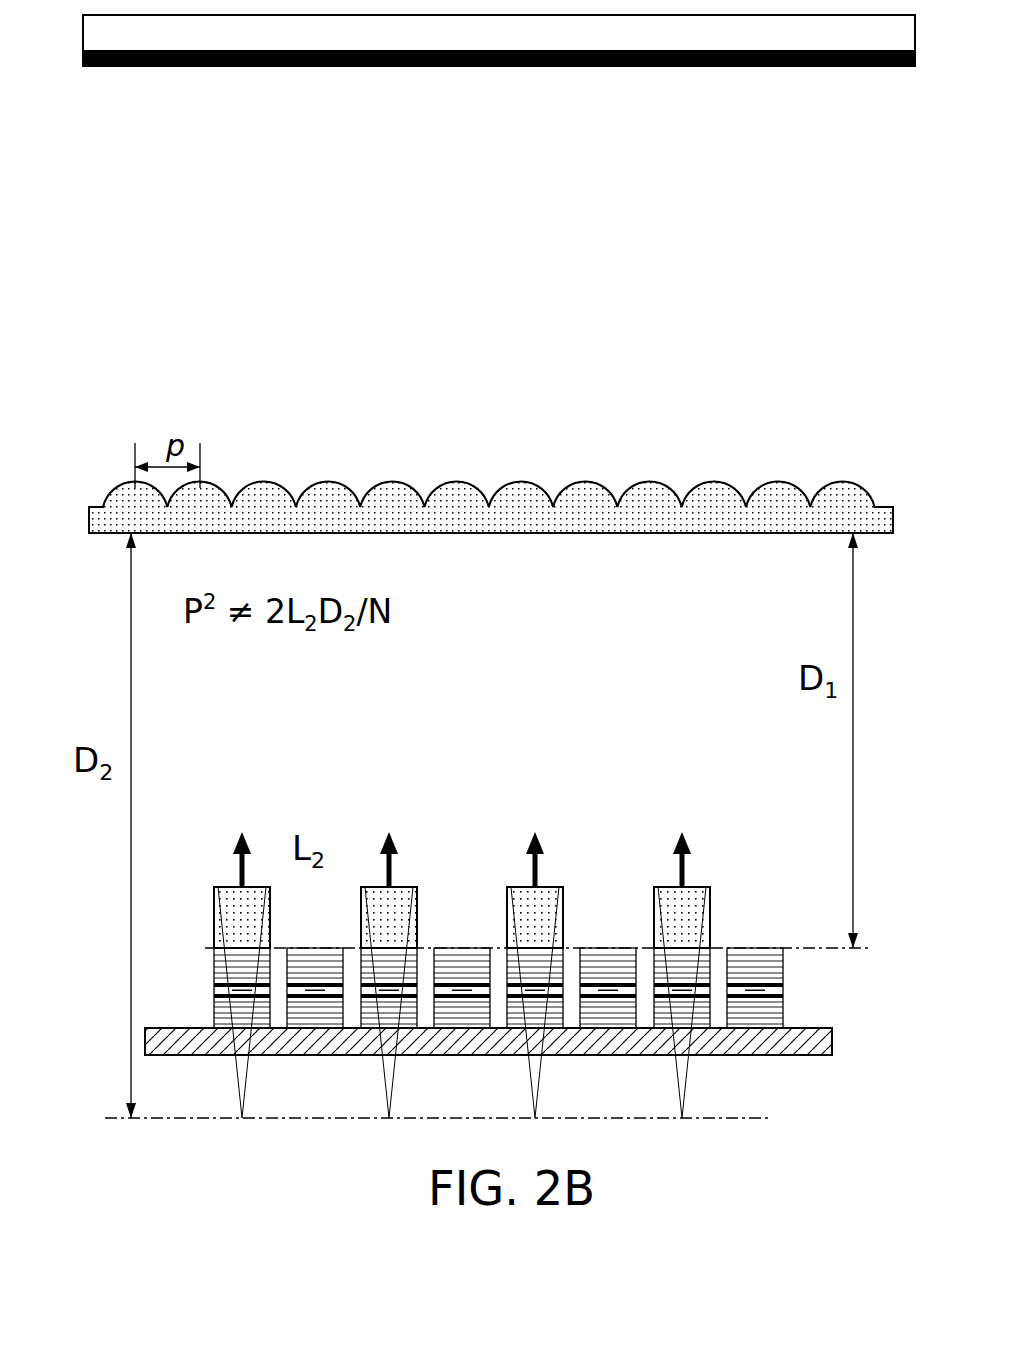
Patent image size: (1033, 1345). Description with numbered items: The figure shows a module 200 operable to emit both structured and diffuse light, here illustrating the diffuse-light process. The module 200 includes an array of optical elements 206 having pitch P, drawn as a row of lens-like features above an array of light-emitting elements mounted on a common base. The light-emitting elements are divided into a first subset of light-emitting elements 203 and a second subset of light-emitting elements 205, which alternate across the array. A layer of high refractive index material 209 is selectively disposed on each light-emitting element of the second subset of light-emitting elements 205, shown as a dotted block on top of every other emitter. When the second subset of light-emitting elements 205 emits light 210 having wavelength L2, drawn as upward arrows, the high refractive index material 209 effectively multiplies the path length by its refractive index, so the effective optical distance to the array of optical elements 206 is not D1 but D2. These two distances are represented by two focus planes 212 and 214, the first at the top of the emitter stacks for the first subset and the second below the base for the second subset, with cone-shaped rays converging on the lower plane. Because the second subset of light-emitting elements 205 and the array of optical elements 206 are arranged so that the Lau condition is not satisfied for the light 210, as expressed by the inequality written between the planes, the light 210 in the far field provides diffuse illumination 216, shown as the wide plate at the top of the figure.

The module 200 is at (298, 402).
The first subset of light-emitting elements 203 is at (783, 970).
The second subset of light-emitting elements 205 is at (214, 967).
The array of optical elements 206 is at (458, 487).
The layer of high refractive index material 209 is at (214, 908).
The light 210 is at (392, 868).
The focus plane 212 is at (862, 946).
The focus plane 214 is at (113, 1117).
The diffuse illumination 216 is at (134, 67).